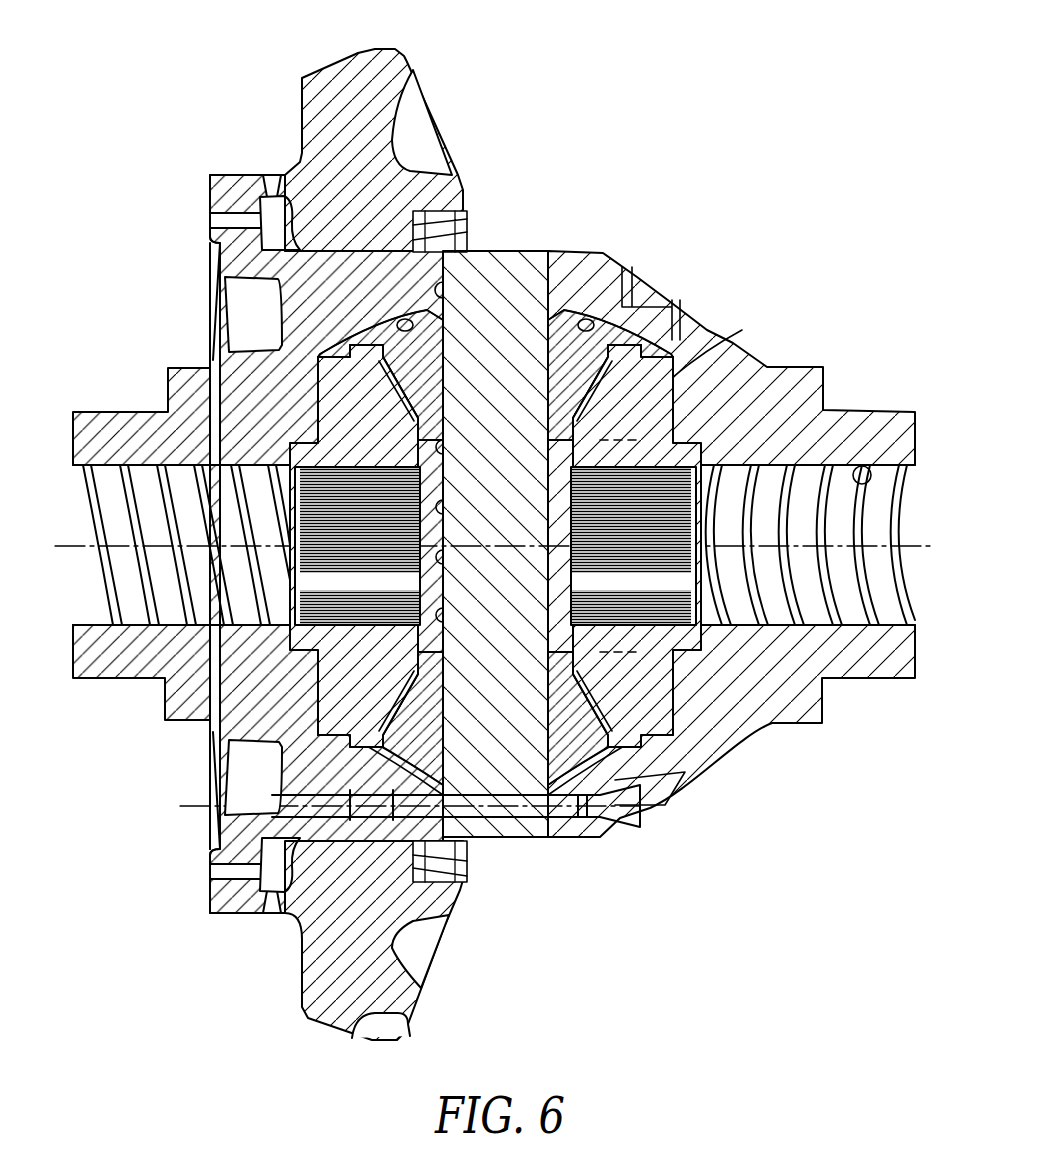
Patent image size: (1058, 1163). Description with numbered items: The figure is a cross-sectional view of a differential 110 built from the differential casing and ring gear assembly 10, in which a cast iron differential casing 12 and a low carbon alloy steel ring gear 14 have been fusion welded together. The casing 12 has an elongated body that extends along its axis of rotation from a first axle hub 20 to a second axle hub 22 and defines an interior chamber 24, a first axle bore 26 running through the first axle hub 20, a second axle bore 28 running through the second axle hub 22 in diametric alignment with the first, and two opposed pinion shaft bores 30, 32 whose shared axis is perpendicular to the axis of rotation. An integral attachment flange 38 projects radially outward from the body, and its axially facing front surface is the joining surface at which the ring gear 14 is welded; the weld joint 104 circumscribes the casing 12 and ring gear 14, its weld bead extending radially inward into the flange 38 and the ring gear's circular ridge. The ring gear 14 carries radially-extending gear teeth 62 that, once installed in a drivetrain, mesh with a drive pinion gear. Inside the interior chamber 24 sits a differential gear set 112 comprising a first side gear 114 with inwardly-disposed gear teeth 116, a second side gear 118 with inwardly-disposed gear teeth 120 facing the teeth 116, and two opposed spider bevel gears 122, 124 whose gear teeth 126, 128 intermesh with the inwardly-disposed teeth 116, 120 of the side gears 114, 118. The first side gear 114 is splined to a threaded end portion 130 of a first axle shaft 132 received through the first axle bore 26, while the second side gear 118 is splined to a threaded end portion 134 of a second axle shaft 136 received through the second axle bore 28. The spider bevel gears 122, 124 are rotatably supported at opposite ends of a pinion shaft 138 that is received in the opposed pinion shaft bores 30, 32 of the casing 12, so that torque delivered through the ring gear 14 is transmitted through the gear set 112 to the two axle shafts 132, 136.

The differential casing and ring gear assembly 10 is at (618, 250).
The differential casing 12 is at (220, 345).
The ring gear 14 is at (333, 62).
The first axle hub 20 is at (130, 418).
The second axle hub 22 is at (888, 412).
The interior chamber 24 is at (390, 328).
The first axle bore 26 is at (125, 473).
The second axle bore 28 is at (870, 470).
The pinion shaft bore 30 is at (440, 292).
The pinion shaft bore 32 is at (482, 815).
The attachment flange 38 is at (206, 258).
The gear teeth 62 is at (442, 213).
The weld joint 104 is at (266, 174).
The differential 110 is at (768, 228).
The differential gear set 112 is at (663, 343).
The first side gear 114 is at (352, 408).
The inwardly-disposed gear teeth 116 is at (318, 385).
The second side gear 118 is at (650, 412).
The inwardly-disposed gear teeth 120 is at (675, 372).
The spider bevel gear 122 is at (628, 290).
The spider bevel gear 124 is at (590, 745).
The gear teeth 126 is at (605, 436).
The gear teeth 128 is at (620, 668).
The threaded end portion 130 is at (223, 480).
The first axle shaft 132 is at (94, 603).
The threaded end portion 134 is at (803, 483).
The second axle shaft 136 is at (897, 513).
The pinion shaft 138 is at (483, 290).